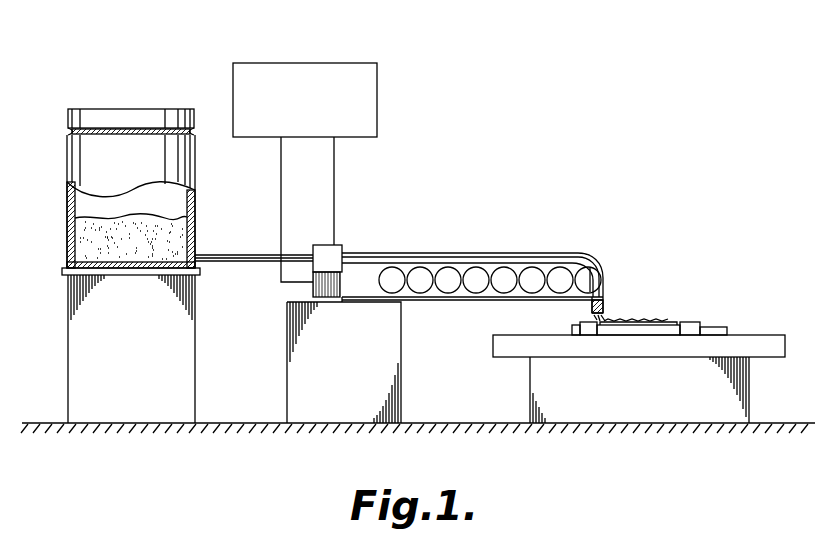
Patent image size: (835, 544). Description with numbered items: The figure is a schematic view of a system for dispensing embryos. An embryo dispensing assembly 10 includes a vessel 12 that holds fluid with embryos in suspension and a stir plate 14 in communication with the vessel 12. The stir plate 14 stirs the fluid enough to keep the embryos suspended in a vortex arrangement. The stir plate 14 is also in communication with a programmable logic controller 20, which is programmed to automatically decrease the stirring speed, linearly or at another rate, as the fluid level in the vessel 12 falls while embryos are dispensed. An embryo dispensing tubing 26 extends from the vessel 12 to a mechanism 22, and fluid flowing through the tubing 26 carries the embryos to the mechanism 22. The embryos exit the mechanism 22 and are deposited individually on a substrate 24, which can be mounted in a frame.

The embryo dispensing assembly 10 is at (86, 81).
The vessel 12 is at (67, 168).
The stir plate 14 is at (68, 335).
The programmable logic controller 20 is at (266, 62).
The mechanism 22 is at (462, 300).
The substrate 24 is at (662, 322).
The embryo dispensing tubing 26 is at (260, 254).